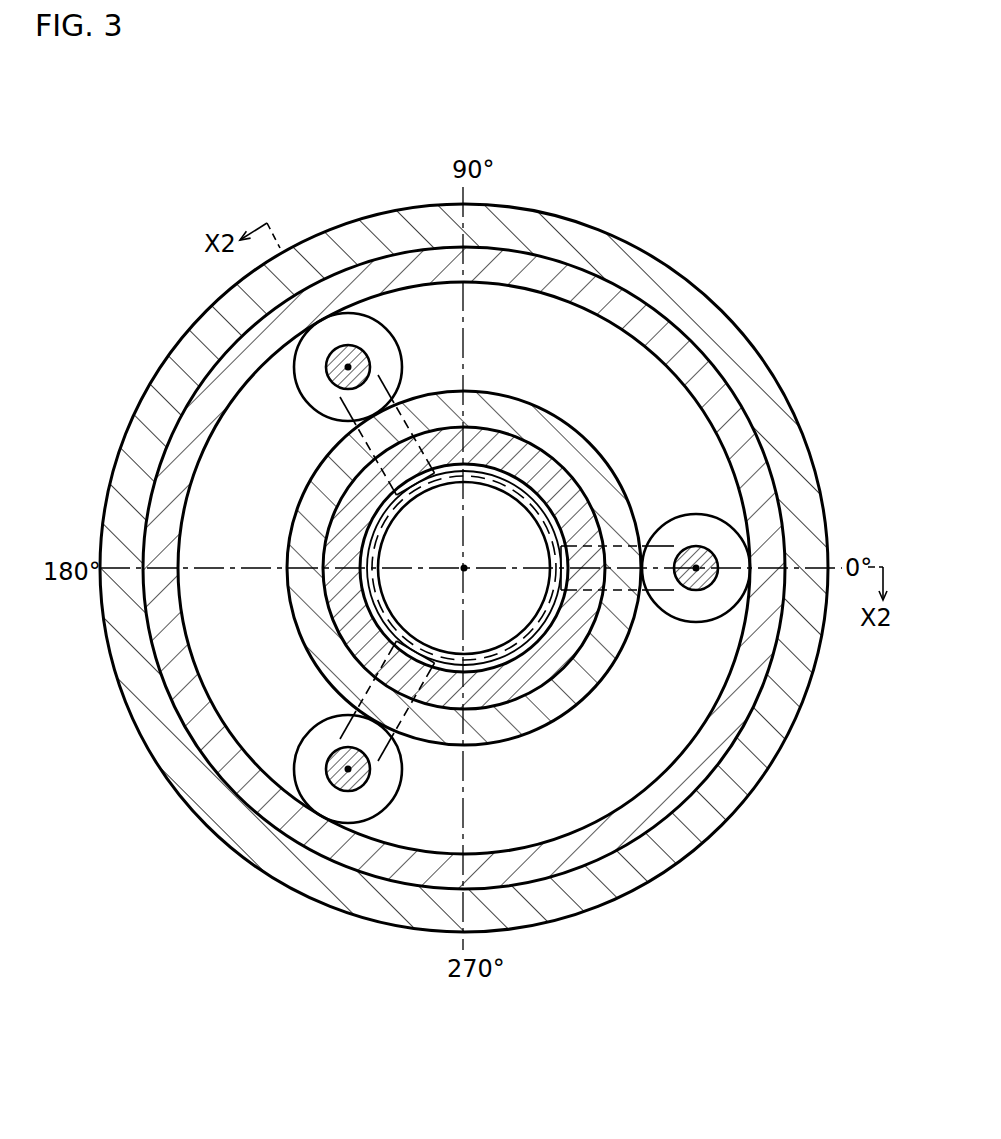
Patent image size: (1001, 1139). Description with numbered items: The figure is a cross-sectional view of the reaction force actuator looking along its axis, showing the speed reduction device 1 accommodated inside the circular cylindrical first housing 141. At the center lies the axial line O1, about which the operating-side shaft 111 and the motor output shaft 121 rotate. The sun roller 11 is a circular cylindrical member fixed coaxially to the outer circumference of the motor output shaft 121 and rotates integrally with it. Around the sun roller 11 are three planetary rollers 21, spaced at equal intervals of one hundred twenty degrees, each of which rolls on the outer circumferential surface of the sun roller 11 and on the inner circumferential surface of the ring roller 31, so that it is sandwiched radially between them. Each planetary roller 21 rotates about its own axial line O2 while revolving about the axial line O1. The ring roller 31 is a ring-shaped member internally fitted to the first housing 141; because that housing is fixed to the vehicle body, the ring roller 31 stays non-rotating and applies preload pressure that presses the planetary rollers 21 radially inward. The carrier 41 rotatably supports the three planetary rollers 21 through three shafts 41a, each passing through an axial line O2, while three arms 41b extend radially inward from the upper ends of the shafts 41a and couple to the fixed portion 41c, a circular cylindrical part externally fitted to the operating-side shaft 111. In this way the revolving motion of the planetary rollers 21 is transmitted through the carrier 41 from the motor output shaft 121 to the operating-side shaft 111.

The speed reduction device 1 is at (583, 196).
The first housing 141 is at (690, 270).
The ring roller 31 is at (705, 372).
The sun roller 11 is at (522, 402).
The operating-side shaft 111 is at (560, 458).
The motor output shaft 121 is at (527, 710).
The carrier 41 is at (368, 533).
The shaft 41a is at (328, 380).
The arm 41b is at (345, 425).
The fixed portion 41c is at (507, 687).
The planetary roller 21 is at (400, 351).
The axial line O1 is at (464, 567).
The axial line O2 is at (349, 367).